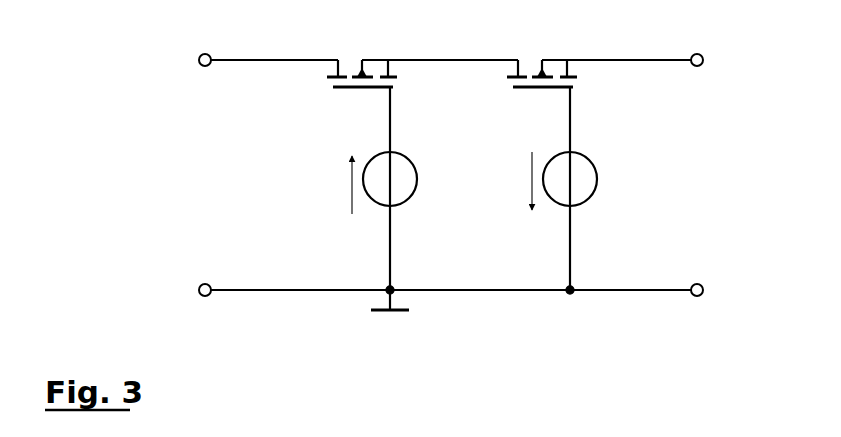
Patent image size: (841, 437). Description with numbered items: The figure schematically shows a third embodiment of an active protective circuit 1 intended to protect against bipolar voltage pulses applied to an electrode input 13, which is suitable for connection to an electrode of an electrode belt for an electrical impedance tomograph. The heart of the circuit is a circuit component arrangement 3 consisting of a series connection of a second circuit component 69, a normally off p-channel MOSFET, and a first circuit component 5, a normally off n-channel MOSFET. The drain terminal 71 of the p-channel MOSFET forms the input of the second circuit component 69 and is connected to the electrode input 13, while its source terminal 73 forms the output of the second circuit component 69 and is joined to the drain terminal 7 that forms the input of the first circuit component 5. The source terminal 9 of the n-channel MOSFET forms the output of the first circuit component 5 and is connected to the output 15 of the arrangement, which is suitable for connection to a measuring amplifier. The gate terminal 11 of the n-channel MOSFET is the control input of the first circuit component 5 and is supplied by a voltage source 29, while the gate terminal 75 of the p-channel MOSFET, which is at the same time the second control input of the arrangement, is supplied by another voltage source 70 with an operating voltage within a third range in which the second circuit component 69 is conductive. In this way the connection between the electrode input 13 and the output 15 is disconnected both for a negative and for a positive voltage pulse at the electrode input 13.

The active protective circuit 1 is at (164, 134).
The circuit component arrangement 3 is at (237, 144).
The first circuit component 5 is at (520, 119).
The drain terminal 7 is at (467, 59).
The source terminal 9 is at (600, 59).
The gate terminal 11 is at (631, 188).
The electrode input 13 is at (198, 60).
The output 15 is at (704, 60).
The voltage source 29 is at (598, 180).
The second circuit component 69 is at (353, 99).
The voltage source 70 is at (394, 206).
The drain terminal 71 is at (262, 59).
The source terminal 73 is at (420, 59).
The gate terminal 75 is at (390, 133).